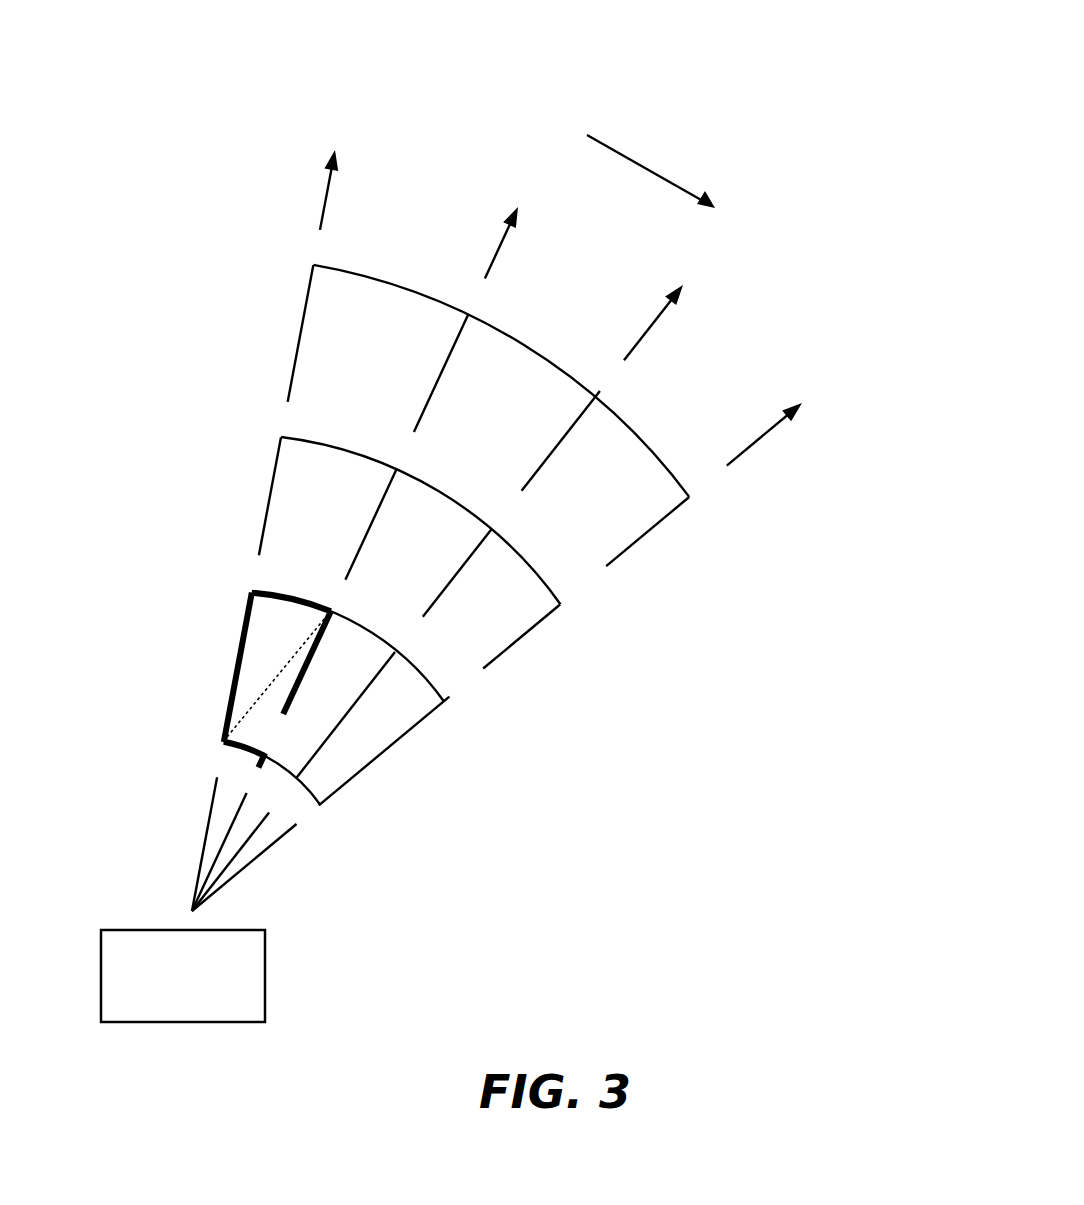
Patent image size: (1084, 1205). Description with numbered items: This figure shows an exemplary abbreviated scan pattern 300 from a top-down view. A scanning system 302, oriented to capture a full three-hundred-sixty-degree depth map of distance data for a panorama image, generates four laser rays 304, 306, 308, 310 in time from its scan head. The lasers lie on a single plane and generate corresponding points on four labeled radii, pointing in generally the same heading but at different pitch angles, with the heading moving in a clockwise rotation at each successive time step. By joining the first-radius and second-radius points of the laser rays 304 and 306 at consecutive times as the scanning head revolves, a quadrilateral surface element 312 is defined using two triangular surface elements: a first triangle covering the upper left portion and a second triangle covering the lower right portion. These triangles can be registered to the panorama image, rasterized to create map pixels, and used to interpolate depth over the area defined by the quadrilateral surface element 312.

The scan pattern 300 is at (813, 33).
The scanning system 302 is at (265, 965).
The laser ray 304 is at (302, 332).
The laser ray 306 is at (438, 382).
The laser ray 308 is at (547, 457).
The laser ray 310 is at (647, 532).
The quadrilateral surface element 312 is at (240, 642).